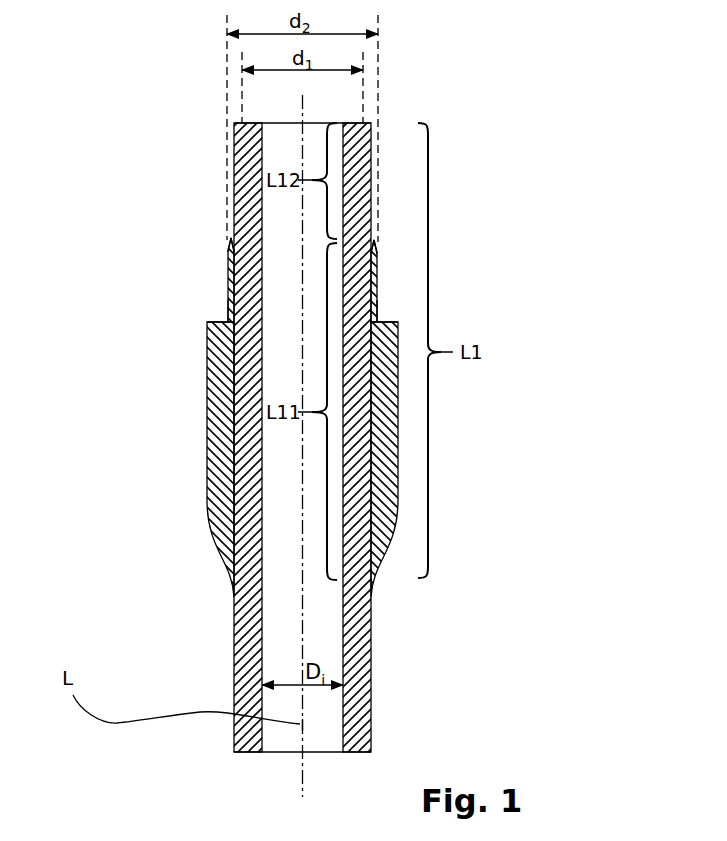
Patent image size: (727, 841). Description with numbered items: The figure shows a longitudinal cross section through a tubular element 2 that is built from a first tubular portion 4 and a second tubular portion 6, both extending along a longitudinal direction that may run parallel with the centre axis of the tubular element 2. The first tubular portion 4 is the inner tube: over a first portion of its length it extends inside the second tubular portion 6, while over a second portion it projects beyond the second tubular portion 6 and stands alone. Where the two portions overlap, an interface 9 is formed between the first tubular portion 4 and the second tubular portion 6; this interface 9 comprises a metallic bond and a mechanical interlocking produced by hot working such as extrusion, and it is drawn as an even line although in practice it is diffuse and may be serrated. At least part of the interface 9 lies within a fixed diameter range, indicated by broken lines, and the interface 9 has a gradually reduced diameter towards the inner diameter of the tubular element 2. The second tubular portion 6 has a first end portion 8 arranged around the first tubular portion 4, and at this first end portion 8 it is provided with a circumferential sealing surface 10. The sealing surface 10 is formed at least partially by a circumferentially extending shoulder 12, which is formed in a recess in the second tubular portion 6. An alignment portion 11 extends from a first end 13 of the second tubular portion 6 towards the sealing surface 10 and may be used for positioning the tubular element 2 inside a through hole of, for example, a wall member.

The tubular element 2 is at (513, 122).
The first tubular portion 4 is at (243, 487).
The second tubular portion 6 is at (243, 640).
The first end portion 8 is at (205, 262).
The interface 9 is at (233, 420).
The sealing surface 10 is at (212, 318).
The alignment portion 11 is at (227, 287).
The shoulder 12 is at (206, 325).
The first end 13 is at (230, 240).